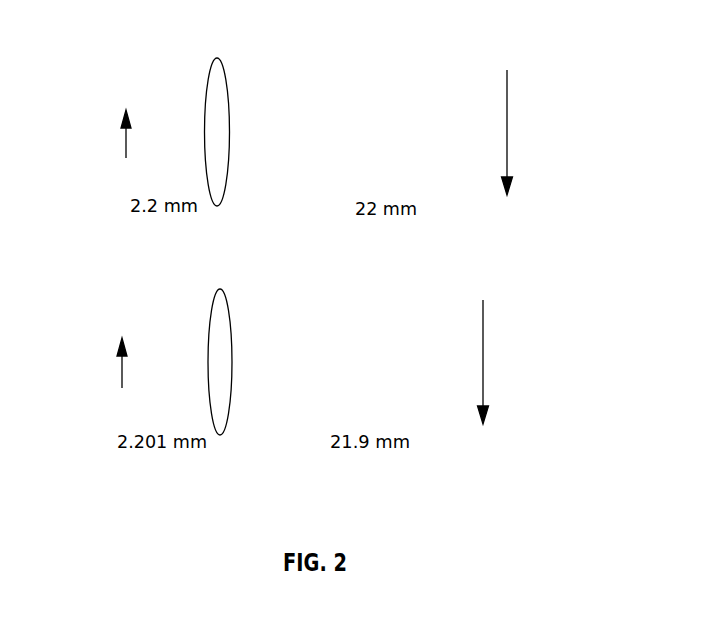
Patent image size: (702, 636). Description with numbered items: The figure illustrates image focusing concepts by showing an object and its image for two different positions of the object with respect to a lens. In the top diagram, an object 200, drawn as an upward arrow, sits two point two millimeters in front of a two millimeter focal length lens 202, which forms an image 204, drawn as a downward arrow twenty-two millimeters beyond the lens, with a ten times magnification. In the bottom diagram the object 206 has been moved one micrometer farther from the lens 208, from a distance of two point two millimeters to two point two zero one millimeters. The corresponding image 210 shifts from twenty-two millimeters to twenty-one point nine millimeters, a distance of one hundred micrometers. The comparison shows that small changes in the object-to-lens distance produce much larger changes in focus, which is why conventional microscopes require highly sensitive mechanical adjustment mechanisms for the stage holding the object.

The object 200 is at (126, 140).
The lens 202 is at (229, 153).
The image 204 is at (507, 165).
The object 206 is at (122, 370).
The lens 208 is at (232, 382).
The image 210 is at (485, 382).